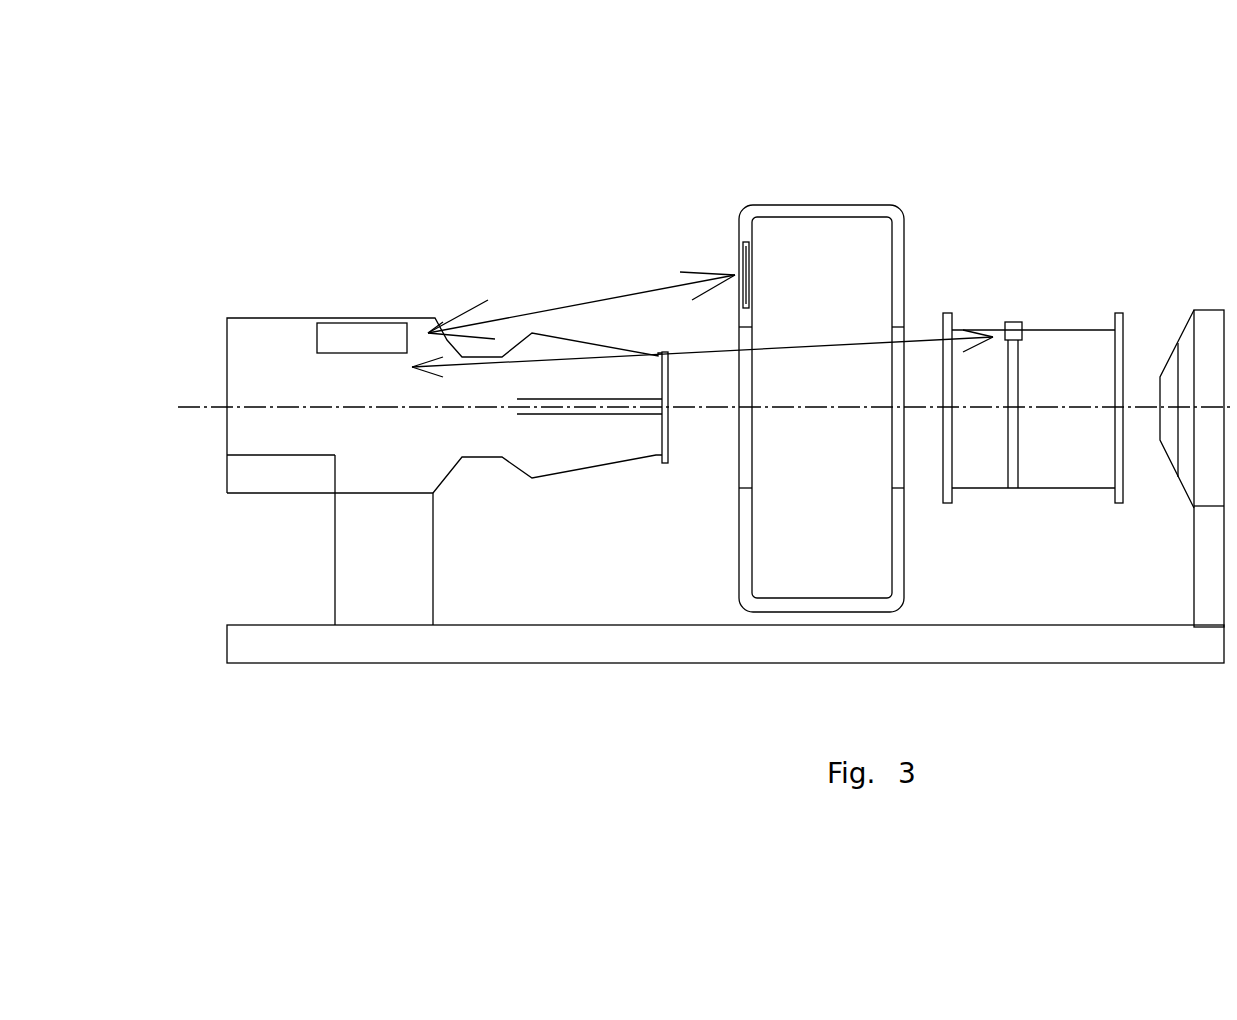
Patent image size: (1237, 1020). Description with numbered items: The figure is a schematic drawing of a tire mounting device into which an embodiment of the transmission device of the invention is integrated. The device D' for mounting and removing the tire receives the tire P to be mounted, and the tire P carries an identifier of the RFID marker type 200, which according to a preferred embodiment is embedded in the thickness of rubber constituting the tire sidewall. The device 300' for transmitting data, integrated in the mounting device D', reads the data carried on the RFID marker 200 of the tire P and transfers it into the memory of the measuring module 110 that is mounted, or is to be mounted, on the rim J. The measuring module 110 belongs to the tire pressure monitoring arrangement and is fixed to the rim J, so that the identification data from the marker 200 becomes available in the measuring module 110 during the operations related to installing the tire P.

The device for mounting and removing the tire D' is at (419, 350).
The device for transmitting the data 300' is at (342, 262).
The RFID marker 200 is at (743, 258).
The tire P is at (807, 210).
The measuring module 110 is at (1015, 328).
The rim J is at (1083, 332).